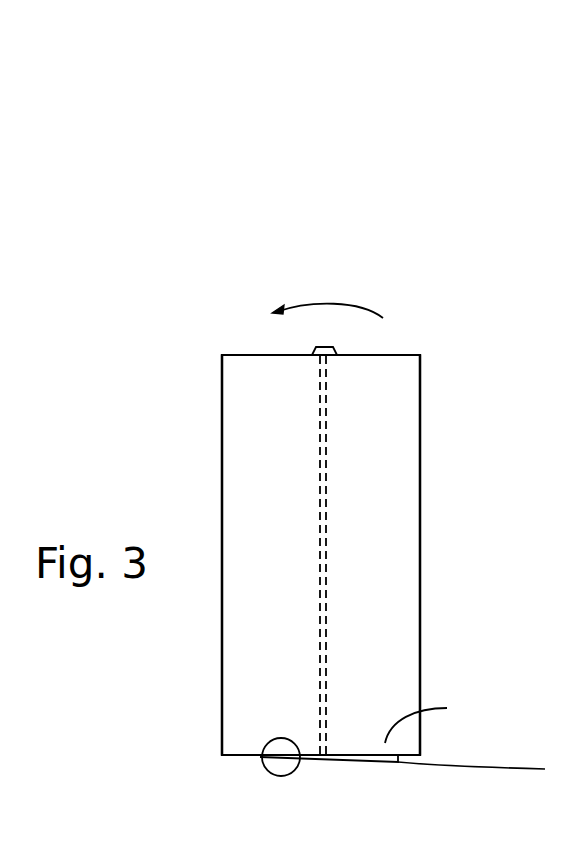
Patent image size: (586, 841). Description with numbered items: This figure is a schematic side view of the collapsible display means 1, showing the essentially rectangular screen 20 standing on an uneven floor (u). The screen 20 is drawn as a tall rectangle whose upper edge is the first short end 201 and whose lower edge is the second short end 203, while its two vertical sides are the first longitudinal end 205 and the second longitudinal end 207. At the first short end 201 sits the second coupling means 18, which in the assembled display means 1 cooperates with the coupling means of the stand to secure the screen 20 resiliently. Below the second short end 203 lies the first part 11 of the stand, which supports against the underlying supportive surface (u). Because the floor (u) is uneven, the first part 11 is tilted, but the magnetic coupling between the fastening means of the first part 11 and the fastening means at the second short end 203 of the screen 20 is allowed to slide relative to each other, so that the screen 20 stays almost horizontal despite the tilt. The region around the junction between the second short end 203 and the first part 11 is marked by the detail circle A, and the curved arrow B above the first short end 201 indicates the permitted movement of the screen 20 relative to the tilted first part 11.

The collapsible display means 1 is at (423, 170).
The screen 20 is at (321, 555).
The second coupling means 18 is at (335, 350).
The first short end 201 is at (238, 355).
The second longitudinal end 207 is at (222, 450).
The first longitudinal end 205 is at (420, 520).
The second short end 203 is at (233, 757).
The first part 11 is at (372, 763).
The detail region A is at (267, 763).
The rotation direction B is at (327, 287).
The underlying supportive surface u is at (487, 769).